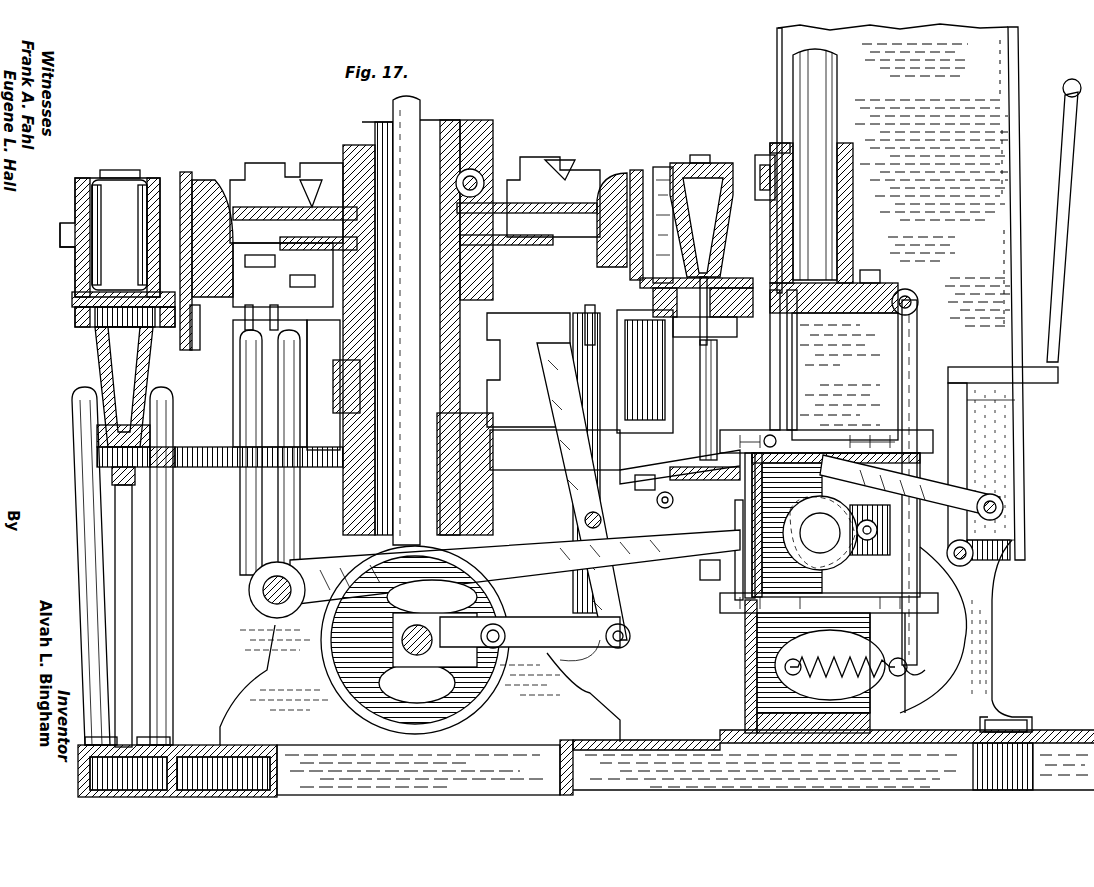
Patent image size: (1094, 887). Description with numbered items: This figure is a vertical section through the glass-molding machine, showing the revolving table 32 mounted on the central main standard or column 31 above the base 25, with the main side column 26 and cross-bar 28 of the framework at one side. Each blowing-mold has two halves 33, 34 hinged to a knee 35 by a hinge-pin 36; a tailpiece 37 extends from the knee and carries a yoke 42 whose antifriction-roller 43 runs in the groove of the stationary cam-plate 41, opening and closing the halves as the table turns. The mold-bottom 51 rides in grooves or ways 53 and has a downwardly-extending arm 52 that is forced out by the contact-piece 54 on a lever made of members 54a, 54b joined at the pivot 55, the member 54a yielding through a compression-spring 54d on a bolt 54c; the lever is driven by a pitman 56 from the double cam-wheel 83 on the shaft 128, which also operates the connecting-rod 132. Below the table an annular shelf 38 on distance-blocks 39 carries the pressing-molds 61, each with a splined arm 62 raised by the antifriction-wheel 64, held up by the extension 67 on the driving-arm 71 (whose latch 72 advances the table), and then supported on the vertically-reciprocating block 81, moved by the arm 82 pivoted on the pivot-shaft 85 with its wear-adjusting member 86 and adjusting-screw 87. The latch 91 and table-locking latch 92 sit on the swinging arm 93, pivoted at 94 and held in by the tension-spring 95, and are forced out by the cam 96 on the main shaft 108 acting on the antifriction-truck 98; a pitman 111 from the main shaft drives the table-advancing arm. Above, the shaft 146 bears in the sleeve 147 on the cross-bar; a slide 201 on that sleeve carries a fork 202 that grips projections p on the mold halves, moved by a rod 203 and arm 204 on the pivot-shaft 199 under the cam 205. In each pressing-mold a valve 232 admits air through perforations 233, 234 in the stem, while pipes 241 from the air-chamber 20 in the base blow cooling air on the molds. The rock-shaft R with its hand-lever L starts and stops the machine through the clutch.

The air-chamber 20 is at (150, 790).
The base 25 is at (680, 740).
The main side column 26 is at (1005, 80).
The cross-bar 28 is at (845, 376).
The central main standard or column 31 is at (457, 122).
The revolving table 32 is at (75, 322).
The mold half 33 is at (663, 167).
The mold half 34 is at (82, 182).
The knee 35 is at (212, 180).
The hinge-pin 36 is at (184, 180).
The tailpiece 37 is at (340, 207).
The annular shelf 38 is at (215, 470).
The distance-blocks or supports 39 is at (240, 383).
The stationary cam-plate 41 is at (265, 205).
The yoke 42 is at (286, 275).
The antifriction-roller 43 is at (314, 180).
The mold-bottom 51 is at (92, 280).
The downwardly-extending arm 52 is at (200, 340).
The grooves or ways 53 is at (72, 300).
The contact-piece 54 is at (540, 355).
The lever-arm member 54a is at (600, 383).
The lever-arm member 54b is at (625, 606).
The bolt 54c is at (651, 491).
The compression-spring 54d is at (637, 558).
The pivot 55 is at (593, 530).
The pitman 56 is at (618, 650).
The pressing-mold 61 is at (95, 372).
The downwardly-extending arm 62 is at (108, 548).
The antifriction-wheel 64 is at (603, 700).
The extension 67 is at (677, 495).
The driving-arm 71 is at (538, 440).
The latch 72 is at (645, 371).
The vertically-reciprocating block 81 is at (730, 585).
The arm 82 is at (330, 565).
The double cam-wheel 83 is at (494, 705).
The pivot-shaft 85 is at (262, 602).
The member 86 is at (748, 540).
The adjusting-screw 87 is at (735, 540).
The latch 91 is at (720, 638).
The table-locking latch 92 is at (887, 430).
The swinging arm 93 is at (917, 345).
The pivot 94 is at (915, 295).
The tension-spring 95 is at (852, 660).
The cam 96 is at (836, 525).
The antifriction-truck 98 is at (870, 542).
The main shaft 108 is at (820, 533).
The pitman 111 is at (686, 578).
The shaft 128 is at (420, 620).
The connecting-rod 132 is at (420, 104).
The shaft 146 is at (840, 95).
The sleeve 147 is at (855, 167).
The pivot-shaft 199 is at (975, 560).
The slide 201 is at (778, 140).
The fork 202 is at (758, 173).
The rod 203 is at (797, 366).
The arm 204 is at (917, 487).
The cam 205 is at (838, 600).
The valve 232 is at (97, 432).
The perforation 233 is at (115, 476).
The vertical perforation 234 is at (170, 460).
The small pipes 241 is at (97, 453).
The hand-lever L is at (1058, 201).
The rock-shaft R is at (993, 583).
The projections p is at (62, 232).